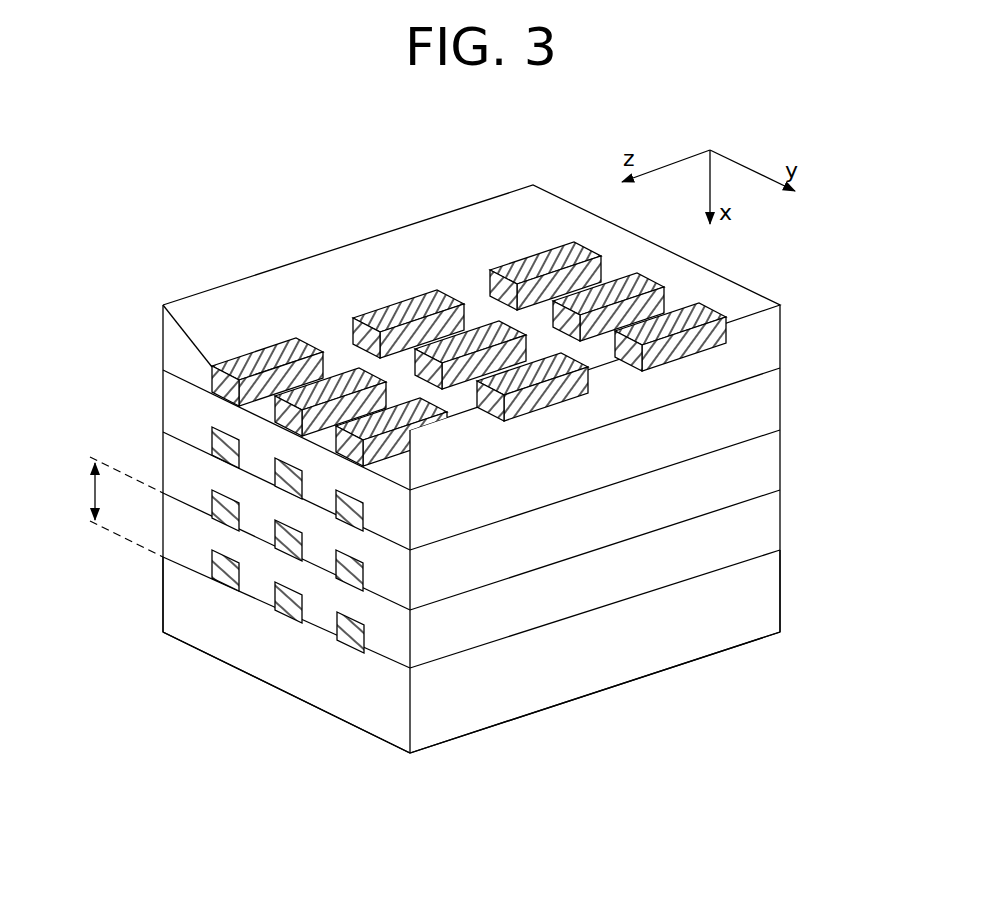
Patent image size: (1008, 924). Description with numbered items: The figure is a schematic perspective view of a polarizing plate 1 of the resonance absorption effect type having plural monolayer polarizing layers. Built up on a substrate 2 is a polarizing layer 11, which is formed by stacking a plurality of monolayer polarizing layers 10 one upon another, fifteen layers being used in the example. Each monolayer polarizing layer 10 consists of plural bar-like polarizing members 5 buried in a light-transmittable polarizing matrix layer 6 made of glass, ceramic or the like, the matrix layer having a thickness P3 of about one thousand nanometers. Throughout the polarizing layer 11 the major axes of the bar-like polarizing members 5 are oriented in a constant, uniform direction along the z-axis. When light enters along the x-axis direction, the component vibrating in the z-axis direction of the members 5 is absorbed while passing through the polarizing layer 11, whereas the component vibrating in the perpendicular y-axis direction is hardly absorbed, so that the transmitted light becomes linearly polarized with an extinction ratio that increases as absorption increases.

The polarizing plate 1 is at (830, 213).
The substrate 2 is at (180, 603).
The bar-like polarizing member 5 is at (535, 255).
The polarizing matrix layer 6 is at (178, 343).
The monolayer polarizing layer 10 is at (789, 342).
The polarizing layer 11 is at (866, 312).
The thickness of polarizing matrix layer P3 is at (110, 507).